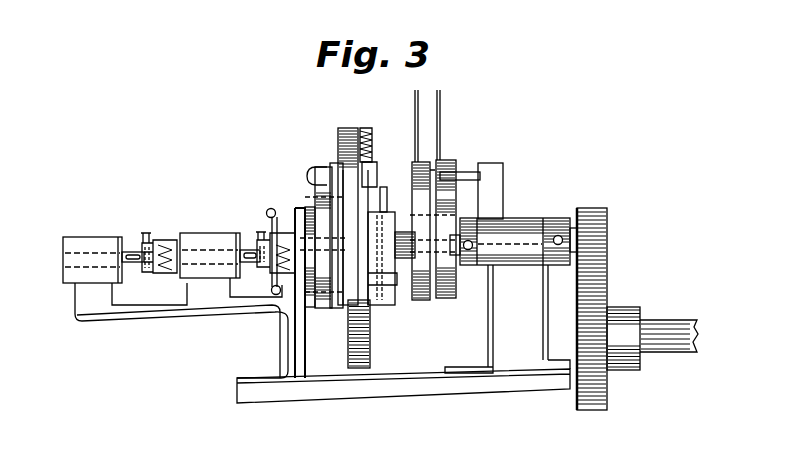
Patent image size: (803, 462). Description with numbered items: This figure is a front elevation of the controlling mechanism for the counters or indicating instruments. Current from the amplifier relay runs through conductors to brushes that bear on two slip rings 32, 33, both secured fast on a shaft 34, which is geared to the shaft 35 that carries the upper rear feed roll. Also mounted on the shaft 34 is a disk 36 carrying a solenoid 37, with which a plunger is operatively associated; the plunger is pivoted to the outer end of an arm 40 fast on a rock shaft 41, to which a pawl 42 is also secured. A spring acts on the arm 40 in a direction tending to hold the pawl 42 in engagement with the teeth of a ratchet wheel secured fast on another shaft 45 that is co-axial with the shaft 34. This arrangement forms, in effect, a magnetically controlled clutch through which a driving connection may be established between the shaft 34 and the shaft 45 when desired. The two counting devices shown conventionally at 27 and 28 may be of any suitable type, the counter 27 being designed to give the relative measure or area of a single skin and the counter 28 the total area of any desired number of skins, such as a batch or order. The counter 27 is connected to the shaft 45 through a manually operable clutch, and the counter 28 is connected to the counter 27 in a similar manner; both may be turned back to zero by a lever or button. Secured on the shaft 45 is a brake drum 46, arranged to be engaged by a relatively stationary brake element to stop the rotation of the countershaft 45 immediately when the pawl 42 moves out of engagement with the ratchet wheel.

The counter 27 is at (205, 232).
The counter 28 is at (92, 236).
The slip ring 32 is at (447, 213).
The slip ring 33 is at (447, 228).
The shaft 34 is at (410, 238).
The shaft 35 is at (664, 325).
The disk 36 is at (370, 346).
The solenoid 37 is at (387, 266).
The arm 40 is at (371, 162).
The rock shaft 41 is at (320, 168).
The pawl 42 is at (313, 190).
The shaft 45 is at (302, 270).
The brake drum 46 is at (302, 207).